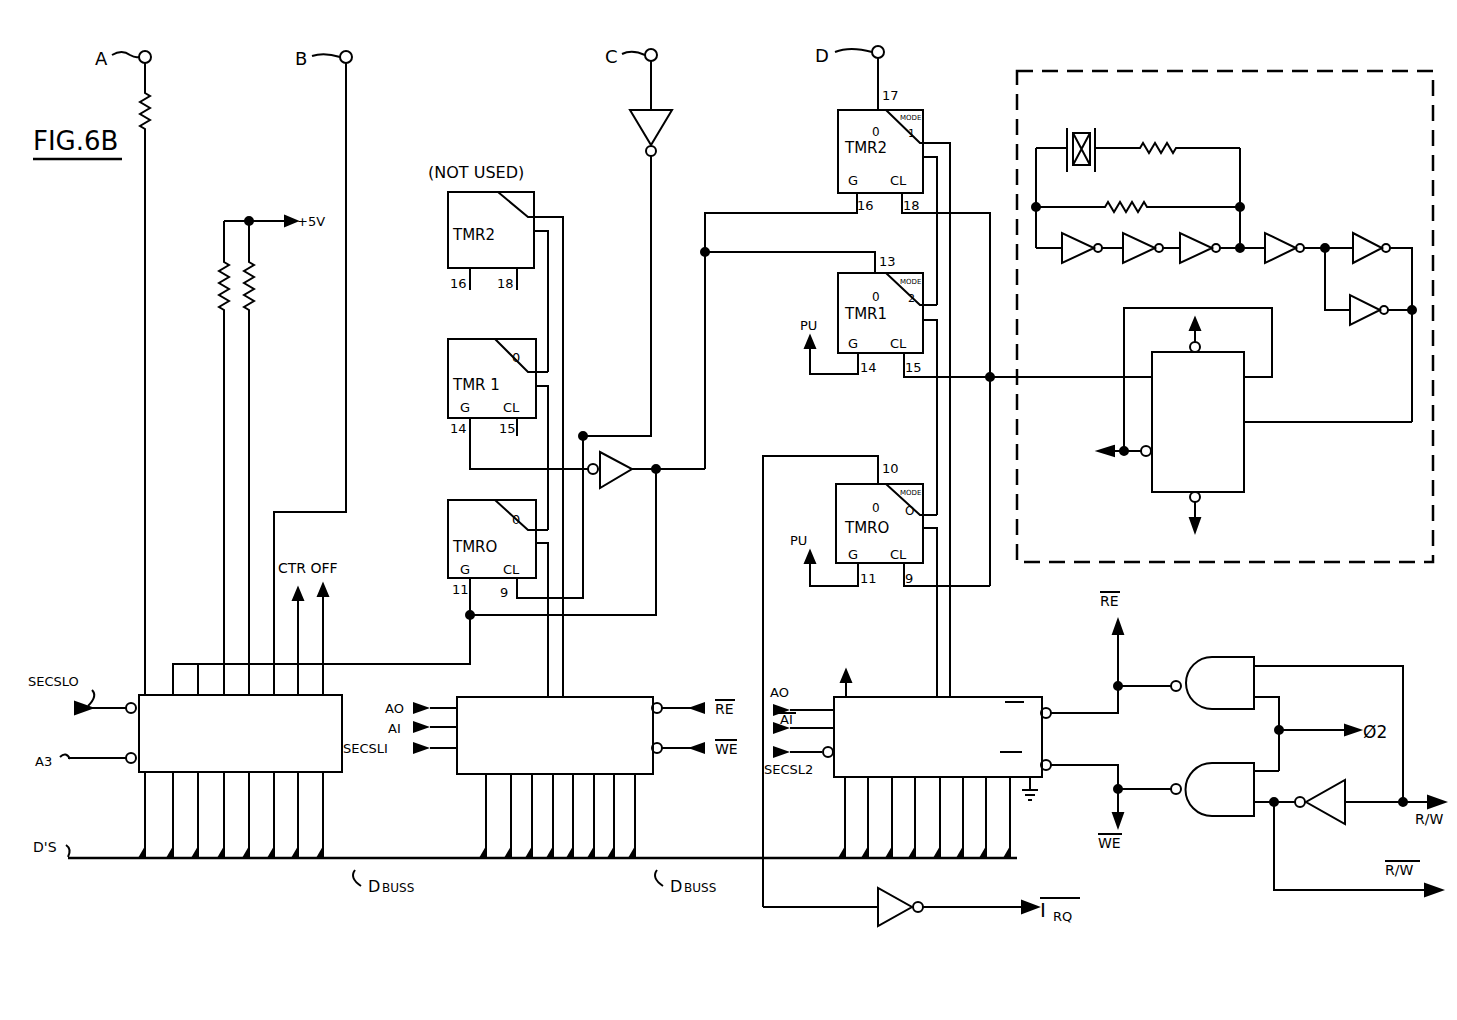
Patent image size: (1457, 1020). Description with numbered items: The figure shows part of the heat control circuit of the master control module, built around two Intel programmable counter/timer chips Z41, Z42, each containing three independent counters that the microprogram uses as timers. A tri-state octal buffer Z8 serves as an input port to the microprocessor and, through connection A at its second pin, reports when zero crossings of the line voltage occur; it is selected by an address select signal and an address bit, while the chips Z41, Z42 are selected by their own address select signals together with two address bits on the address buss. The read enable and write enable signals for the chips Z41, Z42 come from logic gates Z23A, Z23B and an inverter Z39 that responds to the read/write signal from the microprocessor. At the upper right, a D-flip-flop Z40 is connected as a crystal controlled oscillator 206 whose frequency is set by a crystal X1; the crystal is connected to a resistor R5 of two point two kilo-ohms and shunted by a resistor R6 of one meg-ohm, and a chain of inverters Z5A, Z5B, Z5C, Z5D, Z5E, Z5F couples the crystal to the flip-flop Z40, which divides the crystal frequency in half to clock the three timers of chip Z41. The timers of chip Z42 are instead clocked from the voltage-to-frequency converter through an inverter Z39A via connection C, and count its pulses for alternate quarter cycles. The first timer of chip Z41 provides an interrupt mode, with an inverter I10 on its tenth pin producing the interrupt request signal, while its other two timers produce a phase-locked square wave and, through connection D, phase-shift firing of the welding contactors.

The crystal controlled oscillator 206 is at (1225, 316).
The tri-state octal buffer Z8 is at (205, 767).
The integrated circuit counter/timer Z42 is at (559, 777).
The integrated circuit counter/timer Z41 is at (921, 753).
The integrated circuit D-flip-flop Z40 is at (1255, 425).
The inverter Z39 is at (1370, 814).
The inverter Z39A is at (626, 125).
The logic gate Z23A is at (1260, 726).
The logic gate Z23B is at (1206, 787).
The inverter Z5A is at (1078, 263).
The inverter Z5B is at (1143, 263).
The inverter Z5C is at (1203, 263).
The inverter Z5D is at (1273, 263).
The inverter Z5E is at (1344, 256).
The inverter Z5F is at (1347, 325).
The resistor R5 is at (1160, 152).
The resistor R6 is at (1138, 196).
The crystal X1 is at (1083, 128).
The inverter I10 is at (890, 916).